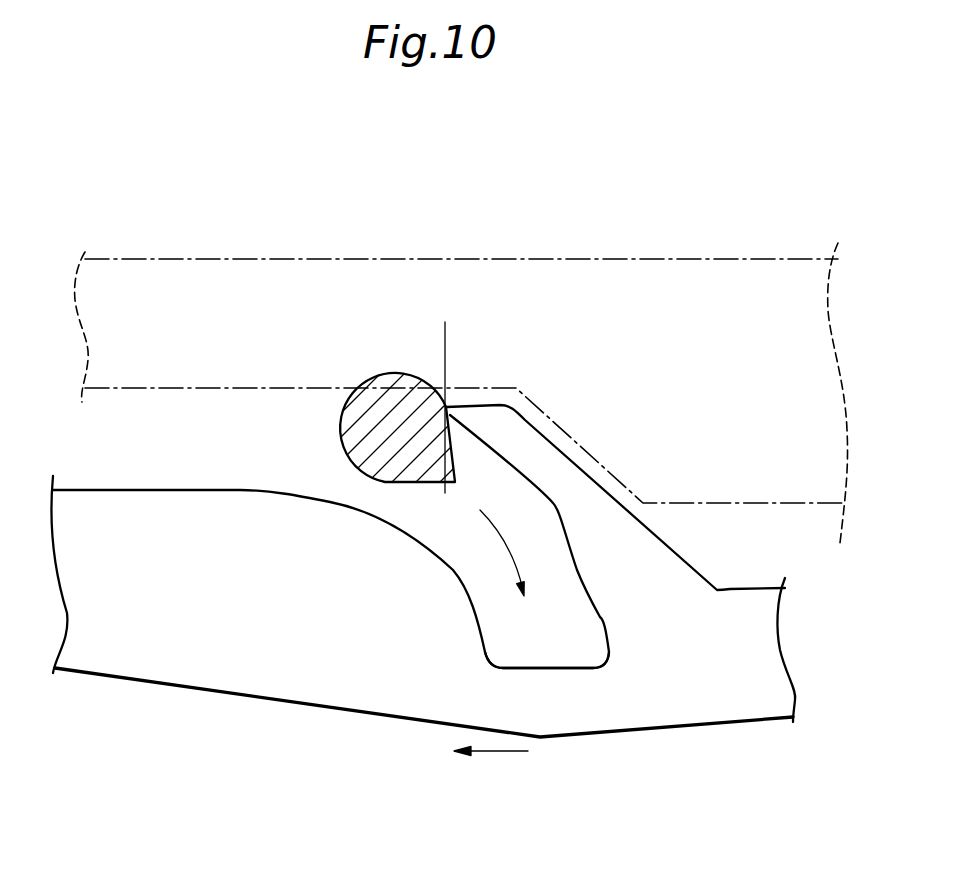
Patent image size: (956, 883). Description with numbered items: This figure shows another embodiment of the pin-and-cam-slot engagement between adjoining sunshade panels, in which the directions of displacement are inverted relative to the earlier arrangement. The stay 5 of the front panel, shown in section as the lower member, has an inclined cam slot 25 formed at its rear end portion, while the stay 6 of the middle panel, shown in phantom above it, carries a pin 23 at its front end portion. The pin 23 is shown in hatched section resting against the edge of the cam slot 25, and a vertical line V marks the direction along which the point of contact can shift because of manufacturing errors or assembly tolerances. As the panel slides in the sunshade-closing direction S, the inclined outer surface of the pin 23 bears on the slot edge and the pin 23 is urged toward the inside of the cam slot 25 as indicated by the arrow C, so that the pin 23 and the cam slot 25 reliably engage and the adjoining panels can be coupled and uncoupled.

The stay 5 is at (205, 690).
The stay 6 is at (630, 263).
The pin 23 is at (365, 378).
The inclined cam slot 25 is at (598, 618).
The vertical line V is at (445, 353).
The arrow C is at (498, 542).
The sunshade-closing sliding direction S is at (488, 752).